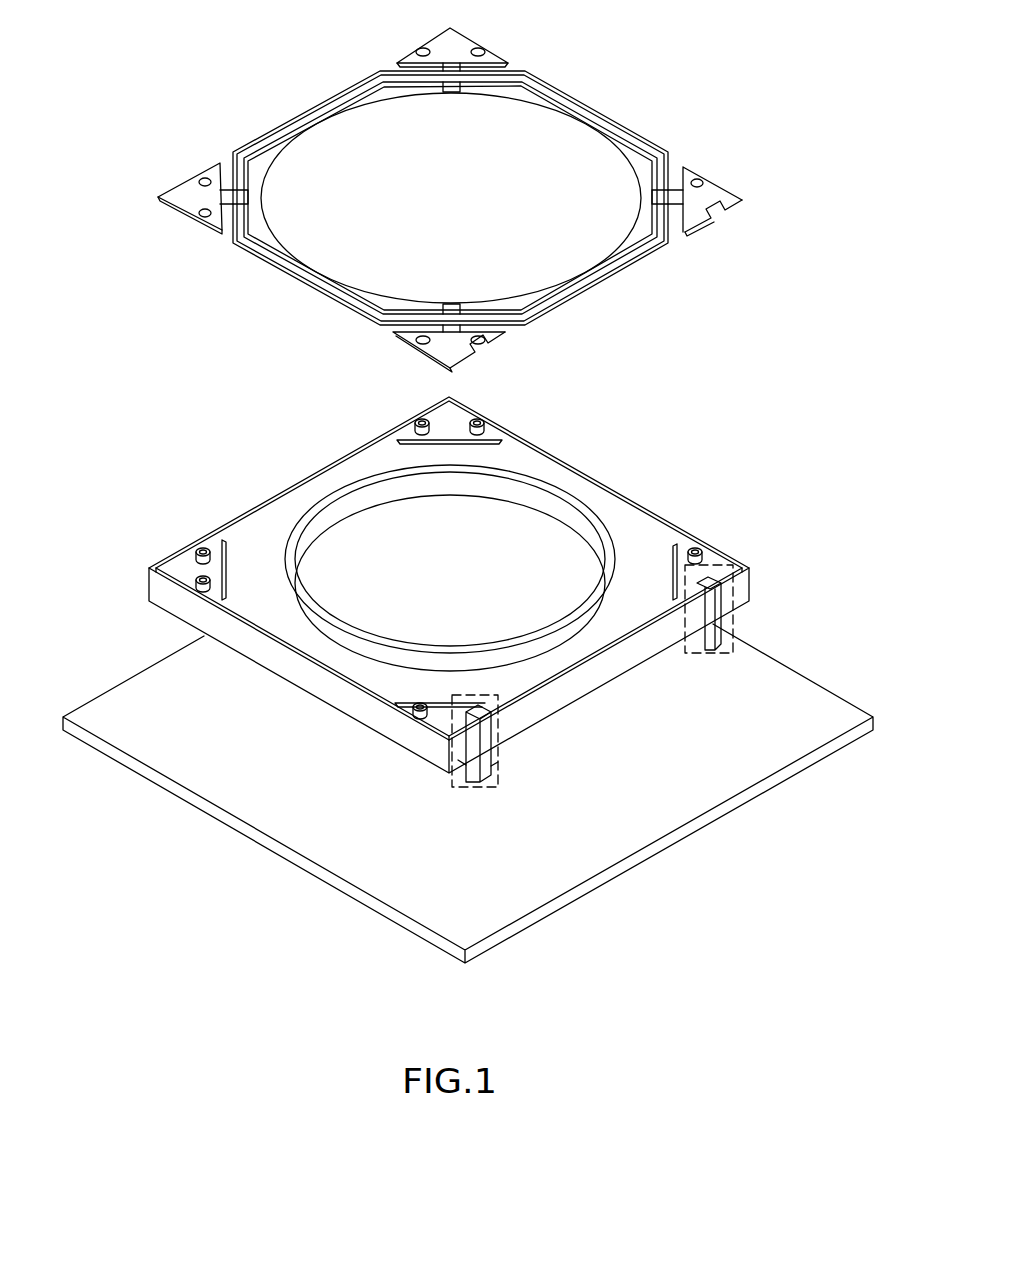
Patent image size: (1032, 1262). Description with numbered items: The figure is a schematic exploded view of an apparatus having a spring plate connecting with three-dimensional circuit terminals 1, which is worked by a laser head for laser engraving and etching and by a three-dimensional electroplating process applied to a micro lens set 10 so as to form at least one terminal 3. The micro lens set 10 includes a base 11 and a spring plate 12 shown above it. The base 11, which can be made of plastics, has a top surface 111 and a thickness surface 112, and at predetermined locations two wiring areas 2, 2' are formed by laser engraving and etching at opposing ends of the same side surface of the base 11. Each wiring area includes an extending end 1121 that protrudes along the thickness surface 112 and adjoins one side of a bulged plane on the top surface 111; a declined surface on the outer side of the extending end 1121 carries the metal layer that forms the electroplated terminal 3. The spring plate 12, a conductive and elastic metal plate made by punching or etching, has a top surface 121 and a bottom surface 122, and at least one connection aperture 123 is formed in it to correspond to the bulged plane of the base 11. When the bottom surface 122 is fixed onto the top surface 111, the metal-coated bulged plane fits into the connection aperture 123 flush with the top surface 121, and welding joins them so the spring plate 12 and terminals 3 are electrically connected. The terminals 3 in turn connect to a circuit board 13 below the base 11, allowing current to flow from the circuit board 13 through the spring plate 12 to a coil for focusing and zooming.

The apparatus having a spring plate connecting with 3D circuit terminals 1 is at (757, 455).
The micro lens set 10 is at (168, 356).
The base 11 is at (290, 487).
The top surface 111 is at (443, 717).
The thickness surface 112 is at (563, 698).
The extending end 1121 is at (465, 760).
The spring plate 12 is at (280, 276).
The top surface 121 is at (445, 336).
The bottom surface 122 is at (430, 356).
The connection aperture 123 is at (713, 220).
The circuit board 13 is at (121, 700).
The wiring area 2 is at (480, 682).
The wiring area 2' is at (749, 573).
The terminal 3 is at (528, 714).